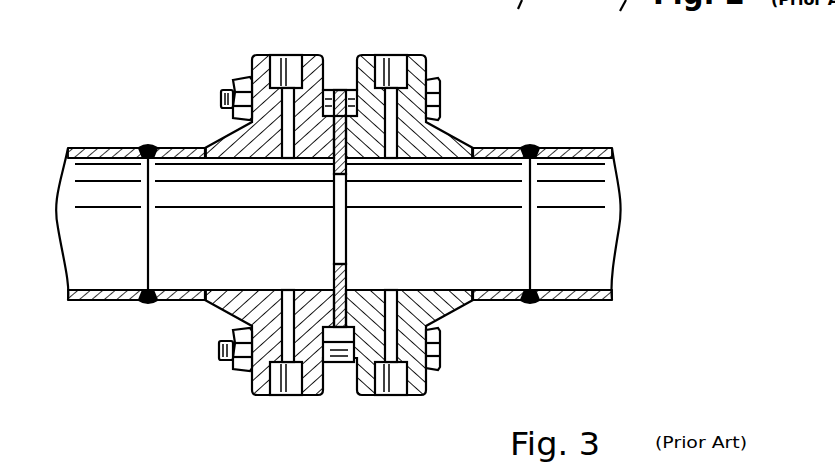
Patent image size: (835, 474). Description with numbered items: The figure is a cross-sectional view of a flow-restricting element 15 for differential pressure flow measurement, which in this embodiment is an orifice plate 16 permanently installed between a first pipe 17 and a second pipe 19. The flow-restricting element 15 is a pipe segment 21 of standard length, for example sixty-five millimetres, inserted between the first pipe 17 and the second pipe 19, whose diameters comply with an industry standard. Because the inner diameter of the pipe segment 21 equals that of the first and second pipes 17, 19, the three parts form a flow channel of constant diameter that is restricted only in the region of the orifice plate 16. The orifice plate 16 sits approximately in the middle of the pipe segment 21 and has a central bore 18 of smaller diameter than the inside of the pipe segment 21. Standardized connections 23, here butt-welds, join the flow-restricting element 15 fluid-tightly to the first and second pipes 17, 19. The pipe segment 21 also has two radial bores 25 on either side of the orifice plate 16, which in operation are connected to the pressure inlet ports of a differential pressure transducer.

The flow-restricting element 15 is at (319, 206).
The orifice plate 16 is at (341, 170).
The first pipe 17 is at (99, 150).
The central bore 18 is at (341, 218).
The second pipe 19 is at (582, 150).
The pipe segment 21 is at (181, 150).
The connections 23 is at (148, 302).
The radial bores 25 is at (288, 62).